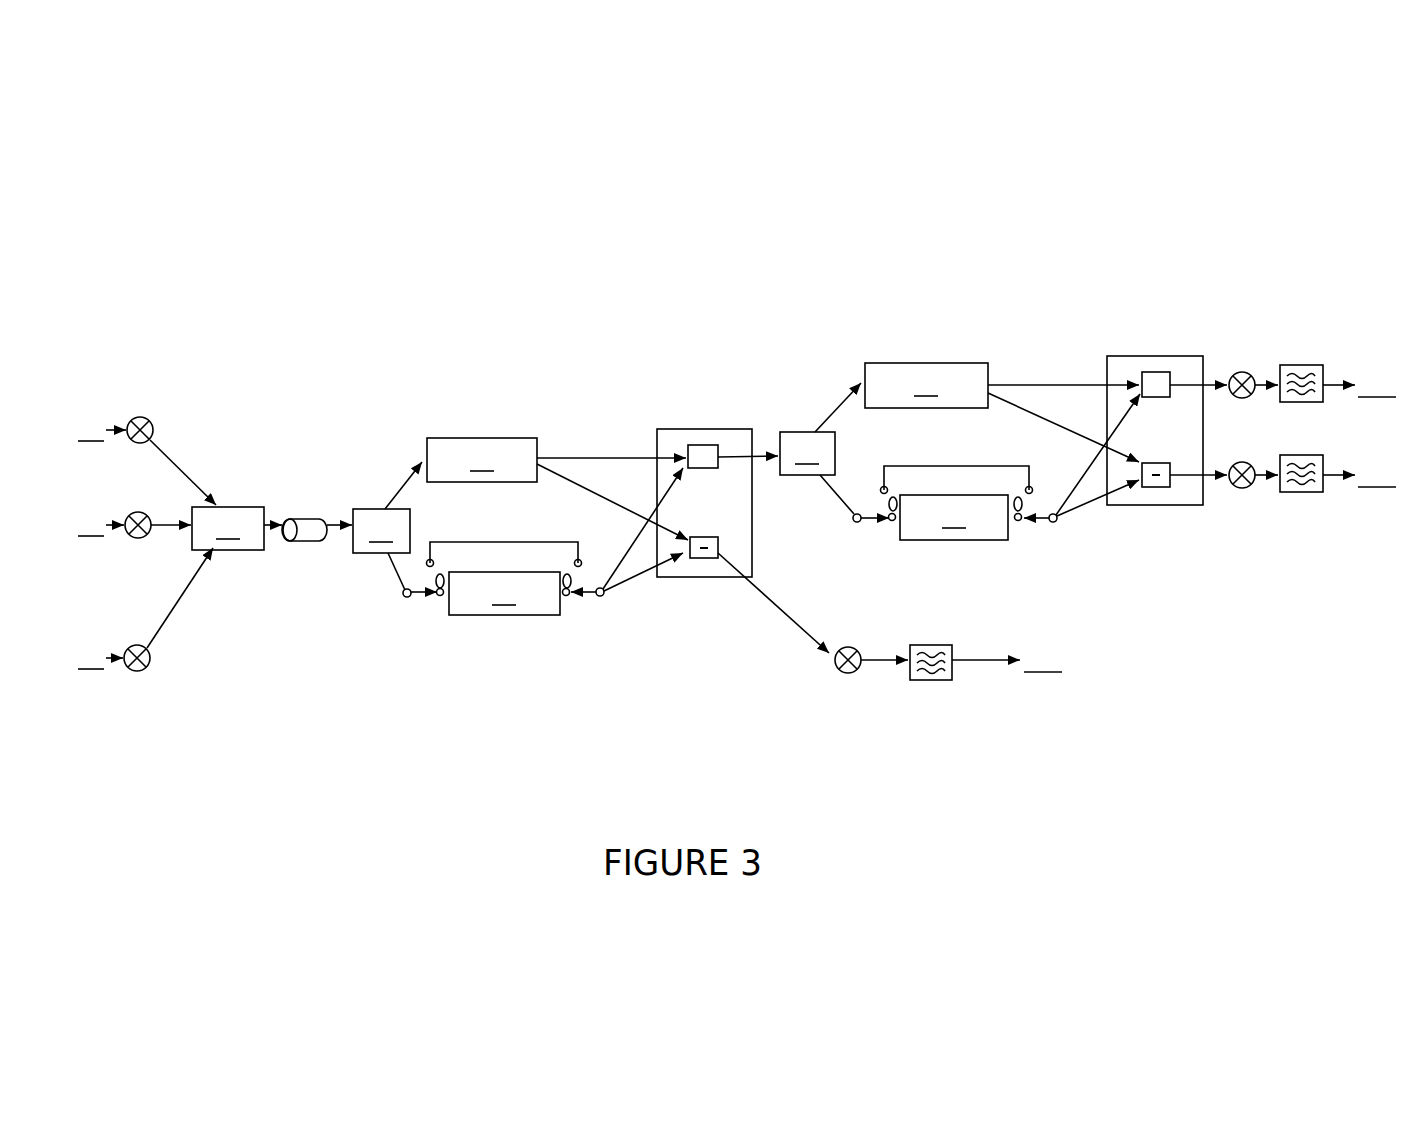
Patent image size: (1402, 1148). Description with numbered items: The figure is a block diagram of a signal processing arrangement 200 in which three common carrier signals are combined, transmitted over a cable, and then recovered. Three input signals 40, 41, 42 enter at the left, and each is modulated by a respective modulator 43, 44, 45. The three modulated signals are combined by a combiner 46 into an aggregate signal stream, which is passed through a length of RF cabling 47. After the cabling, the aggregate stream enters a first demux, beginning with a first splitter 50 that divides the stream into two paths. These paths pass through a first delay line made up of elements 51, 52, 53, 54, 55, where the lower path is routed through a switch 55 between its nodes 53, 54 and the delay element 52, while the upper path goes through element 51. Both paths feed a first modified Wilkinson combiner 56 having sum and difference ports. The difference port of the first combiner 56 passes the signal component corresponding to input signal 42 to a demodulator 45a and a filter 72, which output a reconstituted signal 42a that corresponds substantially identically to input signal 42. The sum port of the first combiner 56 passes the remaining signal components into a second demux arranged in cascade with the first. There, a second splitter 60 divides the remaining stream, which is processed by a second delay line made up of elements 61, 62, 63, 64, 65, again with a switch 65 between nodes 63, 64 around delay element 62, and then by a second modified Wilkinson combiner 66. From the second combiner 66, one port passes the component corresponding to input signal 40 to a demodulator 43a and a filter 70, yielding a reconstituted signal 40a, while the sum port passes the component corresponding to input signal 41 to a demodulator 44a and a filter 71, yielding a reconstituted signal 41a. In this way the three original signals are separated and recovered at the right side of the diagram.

The signal processing system 200 is at (662, 257).
The input signal 40 is at (102, 430).
The input signal 41 is at (101, 525).
The input signal 42 is at (100, 658).
The modulator 43 is at (143, 411).
The modulator 44 is at (137, 540).
The modulator 45 is at (153, 666).
The combiner 46 is at (228, 528).
The length of RF cabling 47 is at (306, 516).
The first splitter 50 is at (381, 531).
The first delay line element 51 is at (482, 460).
The first delay line element 52 is at (504, 593).
The first delay line element 53 is at (409, 599).
The first delay line element 54 is at (591, 604).
The first delay line element 55 is at (506, 531).
The first modified Wilkinson combiner 56 is at (705, 427).
The second splitter 60 is at (807, 453).
The second delay line element 61 is at (926, 385).
The second delay line element 62 is at (954, 517).
The second delay line element 63 is at (862, 538).
The second delay line element 64 is at (1041, 529).
The second delay line element 65 is at (945, 452).
The second modified Wilkinson combiner 66 is at (1155, 352).
The demodulator 43a is at (1243, 364).
The demodulator 44a is at (1242, 490).
The demodulator 45a is at (848, 678).
The filter 70 is at (1302, 363).
The filter 71 is at (1300, 494).
The filter 72 is at (930, 682).
The reconstituted signal 40a is at (1359, 385).
The reconstituted signal 41a is at (1359, 475).
The reconstituted signal 42a is at (1007, 660).